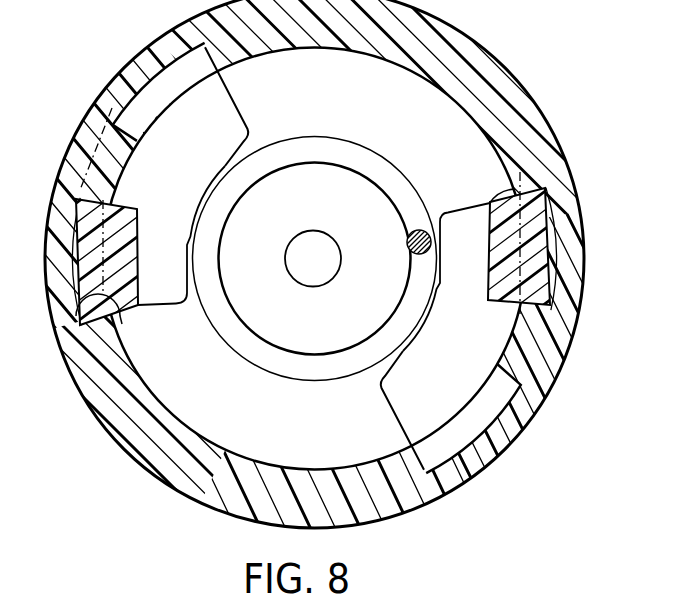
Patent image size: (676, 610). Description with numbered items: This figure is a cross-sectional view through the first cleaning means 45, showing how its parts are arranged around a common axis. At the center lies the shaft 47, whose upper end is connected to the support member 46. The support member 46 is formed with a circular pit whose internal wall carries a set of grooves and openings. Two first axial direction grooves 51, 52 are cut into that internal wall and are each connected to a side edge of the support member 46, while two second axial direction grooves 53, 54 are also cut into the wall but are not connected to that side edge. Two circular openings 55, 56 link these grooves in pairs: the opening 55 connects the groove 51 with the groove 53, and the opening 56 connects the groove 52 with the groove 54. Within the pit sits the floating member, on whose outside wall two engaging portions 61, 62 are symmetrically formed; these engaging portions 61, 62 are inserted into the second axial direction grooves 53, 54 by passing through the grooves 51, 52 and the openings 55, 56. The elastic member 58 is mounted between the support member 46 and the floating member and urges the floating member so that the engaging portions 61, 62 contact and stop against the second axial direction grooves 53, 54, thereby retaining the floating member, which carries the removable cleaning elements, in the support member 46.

The first cleaning means 45 is at (216, 526).
The support member 46 is at (134, 465).
The shaft 47 is at (313, 241).
The first axial direction groove 51 is at (176, 86).
The first axial direction groove 52 is at (448, 417).
The second axial direction groove 53 is at (125, 312).
The second axial direction groove 54 is at (537, 207).
The circular opening 55 is at (186, 232).
The circular opening 56 is at (436, 301).
The elastic member 58 is at (281, 371).
The engaging portion 61 is at (131, 275).
The engaging portion 62 is at (494, 236).